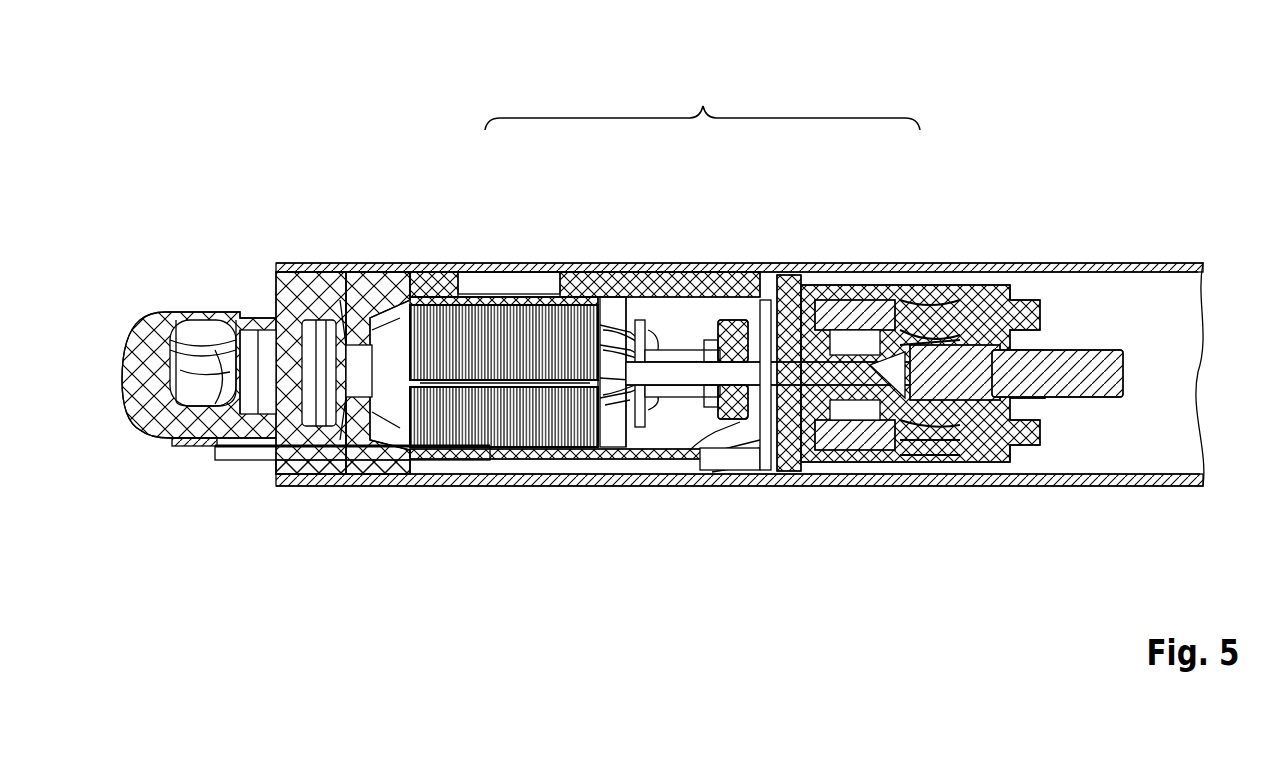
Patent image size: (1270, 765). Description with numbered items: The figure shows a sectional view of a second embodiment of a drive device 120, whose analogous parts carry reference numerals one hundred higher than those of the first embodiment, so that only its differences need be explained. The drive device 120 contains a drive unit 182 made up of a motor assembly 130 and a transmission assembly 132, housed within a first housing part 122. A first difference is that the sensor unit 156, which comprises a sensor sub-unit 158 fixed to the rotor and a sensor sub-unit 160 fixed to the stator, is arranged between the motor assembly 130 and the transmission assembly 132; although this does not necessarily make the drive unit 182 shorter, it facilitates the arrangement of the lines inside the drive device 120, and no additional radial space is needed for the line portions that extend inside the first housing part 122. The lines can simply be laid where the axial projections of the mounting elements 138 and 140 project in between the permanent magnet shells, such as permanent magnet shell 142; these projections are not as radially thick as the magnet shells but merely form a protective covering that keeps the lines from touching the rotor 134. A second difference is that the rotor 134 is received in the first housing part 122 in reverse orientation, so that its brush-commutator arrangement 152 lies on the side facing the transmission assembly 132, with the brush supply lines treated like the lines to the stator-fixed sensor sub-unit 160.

The drive device 120 is at (1135, 143).
The first housing part 122 is at (1153, 268).
The motor assembly 130 is at (508, 230).
The transmission assembly 132 is at (896, 228).
The rotor 134 is at (462, 430).
The mounting element 138 is at (418, 280).
The mounting element 140 is at (610, 270).
The permanent magnet shell 142 is at (617, 430).
The brush-commutator arrangement 152 is at (681, 378).
The sensor unit 156 is at (753, 503).
The sensor sub-unit fixed to the rotor 158 is at (737, 325).
The sensor sub-unit fixed to the stator 160 is at (770, 310).
The drive unit 182 is at (681, 338).